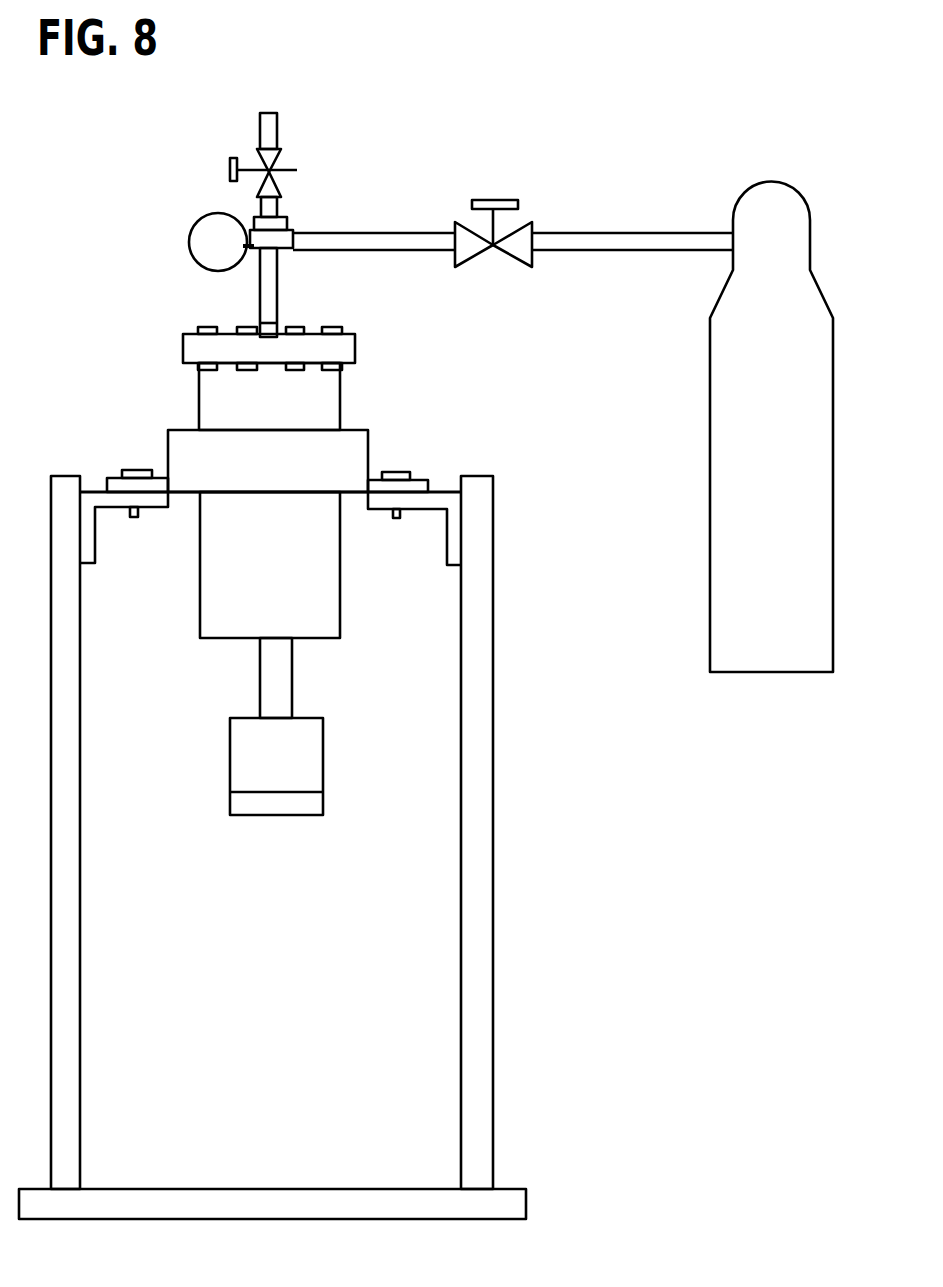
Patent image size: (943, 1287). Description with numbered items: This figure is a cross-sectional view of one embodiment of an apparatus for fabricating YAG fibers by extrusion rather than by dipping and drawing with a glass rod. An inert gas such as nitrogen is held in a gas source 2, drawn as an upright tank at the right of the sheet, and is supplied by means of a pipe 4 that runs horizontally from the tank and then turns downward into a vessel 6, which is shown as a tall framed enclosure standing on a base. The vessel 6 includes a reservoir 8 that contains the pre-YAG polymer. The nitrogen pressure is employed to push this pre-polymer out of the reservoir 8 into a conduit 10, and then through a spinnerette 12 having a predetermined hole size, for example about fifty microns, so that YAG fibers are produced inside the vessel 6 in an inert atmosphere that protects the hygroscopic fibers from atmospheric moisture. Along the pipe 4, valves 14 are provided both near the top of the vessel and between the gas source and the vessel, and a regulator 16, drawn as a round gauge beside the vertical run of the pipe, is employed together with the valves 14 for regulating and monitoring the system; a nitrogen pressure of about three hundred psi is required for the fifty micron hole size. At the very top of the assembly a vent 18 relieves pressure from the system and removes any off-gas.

The gas source 2 is at (710, 389).
The pipe 4 is at (277, 282).
The vessel 6 is at (493, 858).
The reservoir 8 is at (340, 554).
The conduit 10 is at (260, 672).
The spinnerette 12 is at (323, 743).
The valves 14 is at (281, 162).
The regulators 16 is at (190, 247).
The vent 18 is at (277, 123).